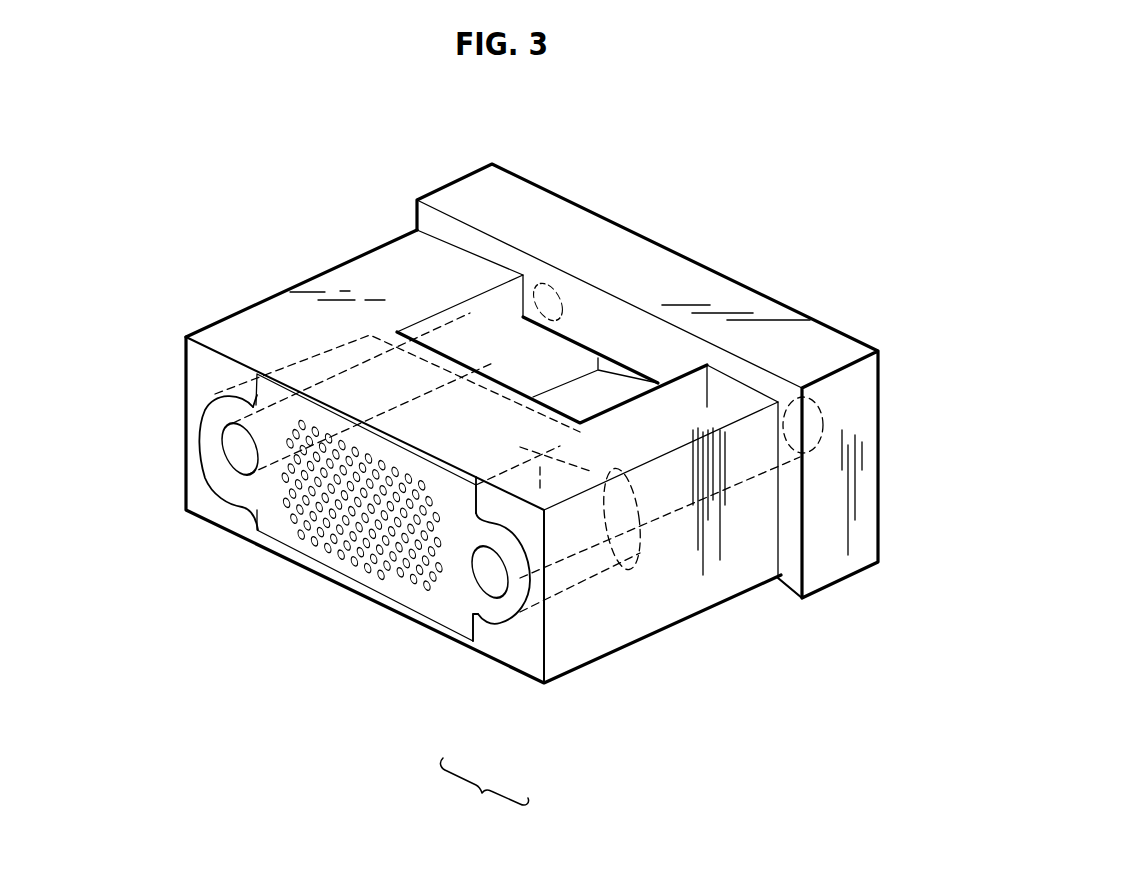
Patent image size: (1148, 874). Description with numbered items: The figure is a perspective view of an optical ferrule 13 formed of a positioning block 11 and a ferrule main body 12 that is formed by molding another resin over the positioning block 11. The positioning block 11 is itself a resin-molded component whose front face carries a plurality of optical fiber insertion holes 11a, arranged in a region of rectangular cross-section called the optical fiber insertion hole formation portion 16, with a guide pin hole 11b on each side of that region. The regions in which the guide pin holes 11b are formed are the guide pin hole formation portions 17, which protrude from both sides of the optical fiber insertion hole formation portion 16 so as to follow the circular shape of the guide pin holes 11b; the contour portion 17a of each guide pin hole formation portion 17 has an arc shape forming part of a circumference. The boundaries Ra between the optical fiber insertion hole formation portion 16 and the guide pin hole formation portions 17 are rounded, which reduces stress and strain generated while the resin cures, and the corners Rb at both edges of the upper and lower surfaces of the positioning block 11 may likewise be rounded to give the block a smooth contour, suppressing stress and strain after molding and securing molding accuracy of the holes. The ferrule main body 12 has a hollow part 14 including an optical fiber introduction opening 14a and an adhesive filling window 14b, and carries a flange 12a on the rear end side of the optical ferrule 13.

The positioning block 11 is at (463, 628).
The optical fiber insertion holes 11a is at (329, 550).
The guide pin holes 11b is at (233, 448).
The ferrule main body 12 is at (558, 662).
The flange 12a is at (575, 225).
The optical ferrule 13 is at (484, 795).
The hollow part 14 is at (617, 387).
The optical fiber introduction opening 14a is at (532, 328).
The adhesive filling window 14b is at (598, 415).
The optical fiber insertion hole formation portion 16 is at (347, 568).
The guide pin hole formation portions 17 is at (212, 472).
The contour portion 17a is at (203, 435).
The boundaries Ra is at (253, 407).
The corners Rb is at (253, 407).